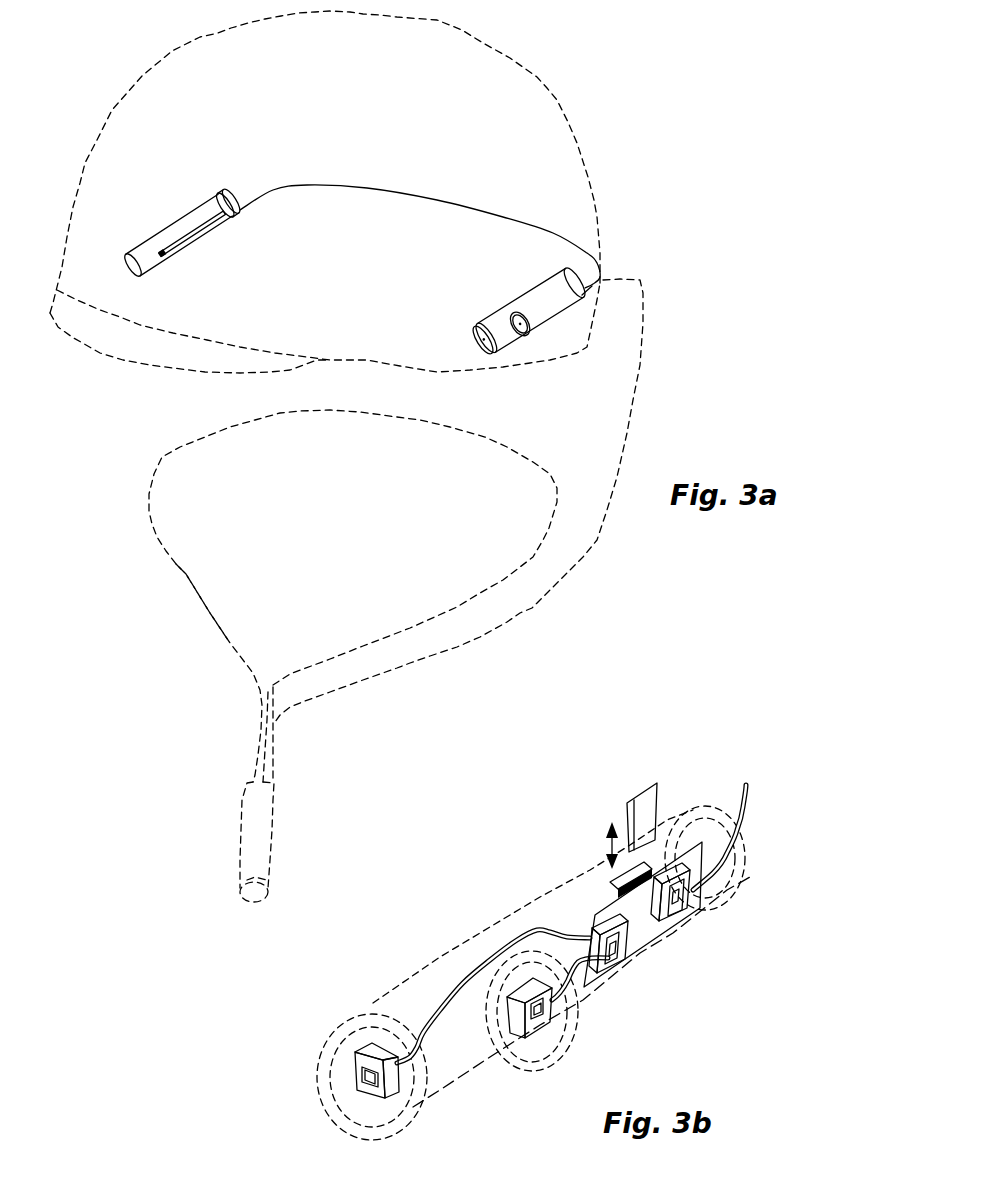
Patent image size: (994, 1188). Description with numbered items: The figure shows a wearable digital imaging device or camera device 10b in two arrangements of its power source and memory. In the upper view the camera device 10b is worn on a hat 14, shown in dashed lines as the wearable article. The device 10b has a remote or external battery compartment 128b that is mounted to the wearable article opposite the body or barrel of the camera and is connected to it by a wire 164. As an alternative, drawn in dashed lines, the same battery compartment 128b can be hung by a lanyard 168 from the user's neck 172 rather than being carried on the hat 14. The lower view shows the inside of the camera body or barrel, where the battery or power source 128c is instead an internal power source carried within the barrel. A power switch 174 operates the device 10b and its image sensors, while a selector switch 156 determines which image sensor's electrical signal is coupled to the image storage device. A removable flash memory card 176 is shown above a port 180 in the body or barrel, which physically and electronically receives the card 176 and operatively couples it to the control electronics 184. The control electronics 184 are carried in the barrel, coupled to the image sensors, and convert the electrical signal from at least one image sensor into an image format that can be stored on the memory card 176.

In FIG. 3A, the hat 14 is at (346, 396).
In FIG. 3A, the camera device 10b is at (453, 487).
In FIG. 3B, the camera device 10b is at (571, 909).
In FIG. 3A, the wire 164 is at (476, 409).
In FIG. 3A, the battery compartment 128b is at (184, 487).
In FIG. 3A, the lanyard 168 is at (196, 634).
In FIG. 3A, the user's neck 172 is at (300, 791).
In FIG. 3B, the internal power source 128c is at (571, 973).
In FIG. 3B, the selector switch 156 is at (643, 948).
In FIG. 3B, the power switch 174 is at (714, 927).
In FIG. 3B, the flash memory card 176 is at (613, 803).
In FIG. 3B, the port 180 is at (575, 871).
In FIG. 3B, the control electronics 184 is at (668, 976).